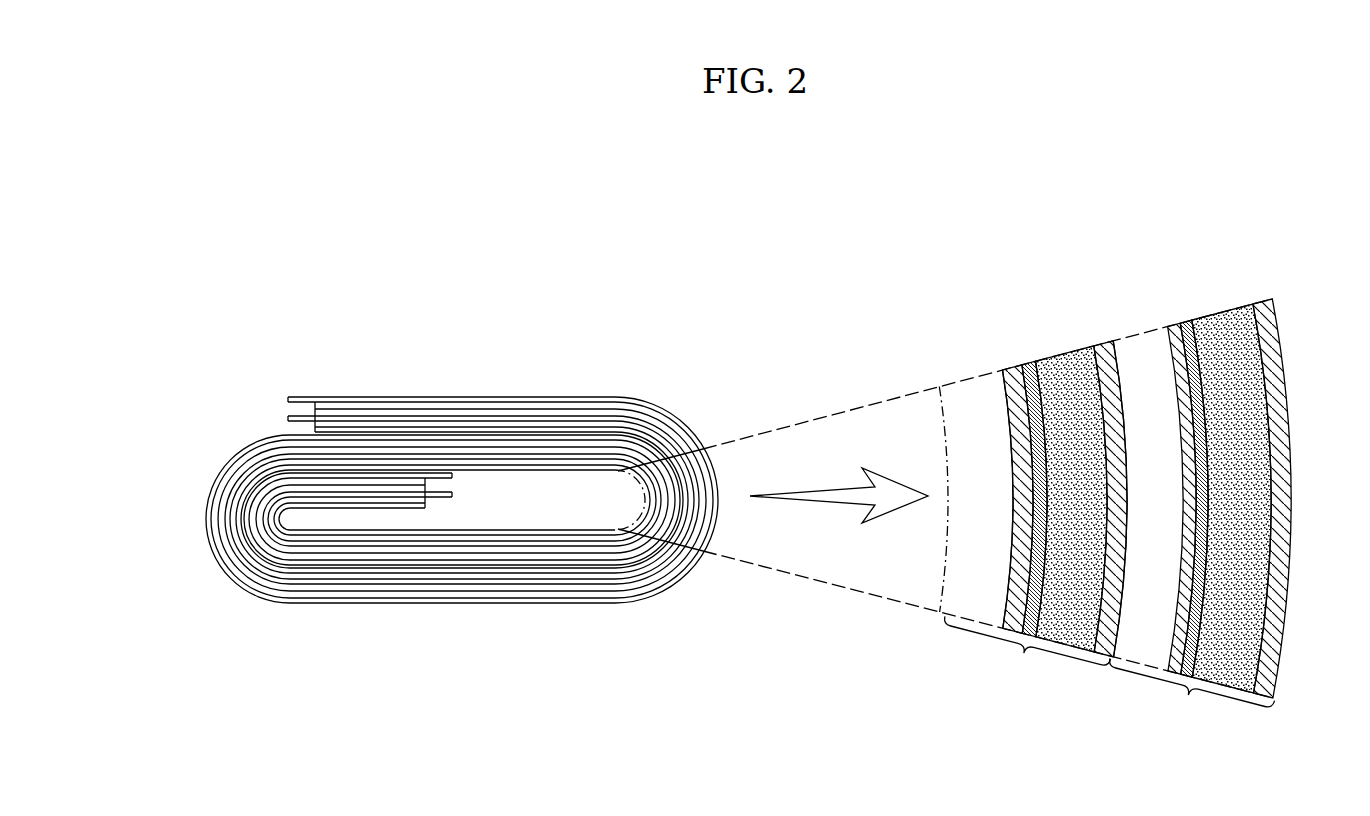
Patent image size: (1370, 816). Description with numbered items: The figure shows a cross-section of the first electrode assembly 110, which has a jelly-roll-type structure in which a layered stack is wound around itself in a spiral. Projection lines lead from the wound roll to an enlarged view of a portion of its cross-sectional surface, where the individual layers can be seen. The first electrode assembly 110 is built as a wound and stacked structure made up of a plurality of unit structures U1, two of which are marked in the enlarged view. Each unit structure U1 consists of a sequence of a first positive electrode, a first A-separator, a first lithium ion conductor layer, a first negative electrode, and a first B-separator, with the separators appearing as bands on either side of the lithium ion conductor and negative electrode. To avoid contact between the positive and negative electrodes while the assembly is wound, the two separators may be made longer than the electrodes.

The first electrode assembly 110 is at (690, 350).
The unit structure U1 is at (1110, 673).